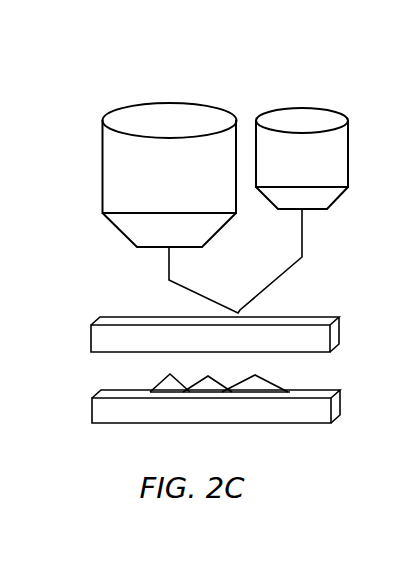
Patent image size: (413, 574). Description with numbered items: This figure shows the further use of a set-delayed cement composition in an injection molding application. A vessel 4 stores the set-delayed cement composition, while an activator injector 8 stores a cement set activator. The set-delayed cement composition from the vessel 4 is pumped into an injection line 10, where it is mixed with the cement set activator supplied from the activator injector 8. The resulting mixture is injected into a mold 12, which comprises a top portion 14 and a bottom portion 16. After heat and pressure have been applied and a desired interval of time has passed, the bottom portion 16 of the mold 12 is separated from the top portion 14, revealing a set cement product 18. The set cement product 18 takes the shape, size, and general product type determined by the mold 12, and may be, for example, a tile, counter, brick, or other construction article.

The vessel 4 is at (147, 116).
The activator injector 8 is at (308, 118).
The injection line 10 is at (243, 313).
The mold 12 is at (104, 298).
The top portion 14 is at (91, 335).
The bottom portion 16 is at (92, 414).
The set cement product 18 is at (155, 383).